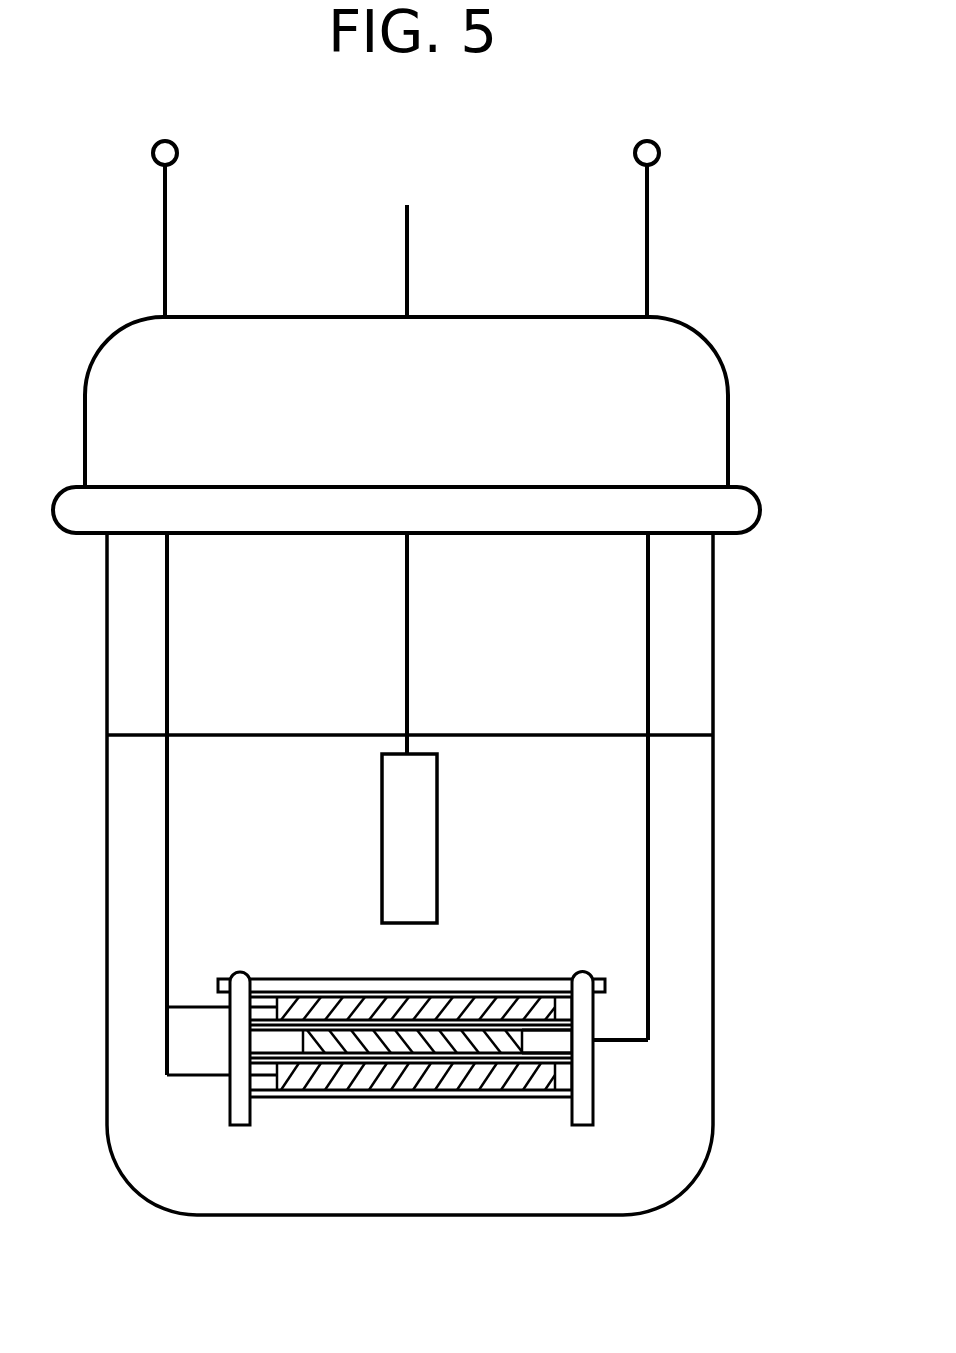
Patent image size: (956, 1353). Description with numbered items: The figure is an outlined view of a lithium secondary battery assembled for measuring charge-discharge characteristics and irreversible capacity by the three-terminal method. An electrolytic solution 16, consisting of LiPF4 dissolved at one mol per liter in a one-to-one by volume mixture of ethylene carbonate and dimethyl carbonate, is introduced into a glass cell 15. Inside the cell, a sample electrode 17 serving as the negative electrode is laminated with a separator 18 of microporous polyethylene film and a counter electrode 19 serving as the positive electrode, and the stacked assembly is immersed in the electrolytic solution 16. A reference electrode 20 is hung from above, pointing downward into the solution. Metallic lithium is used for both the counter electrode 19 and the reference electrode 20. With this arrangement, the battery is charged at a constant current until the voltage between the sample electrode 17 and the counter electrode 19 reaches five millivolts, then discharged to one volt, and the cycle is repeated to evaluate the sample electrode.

The glass cell 15 is at (715, 960).
The electrolytic solution 16 is at (685, 828).
The sample electrode 17 is at (403, 1045).
The separator 18 is at (478, 1025).
The counter electrode 19 is at (334, 1005).
The reference electrode 20 is at (437, 830).